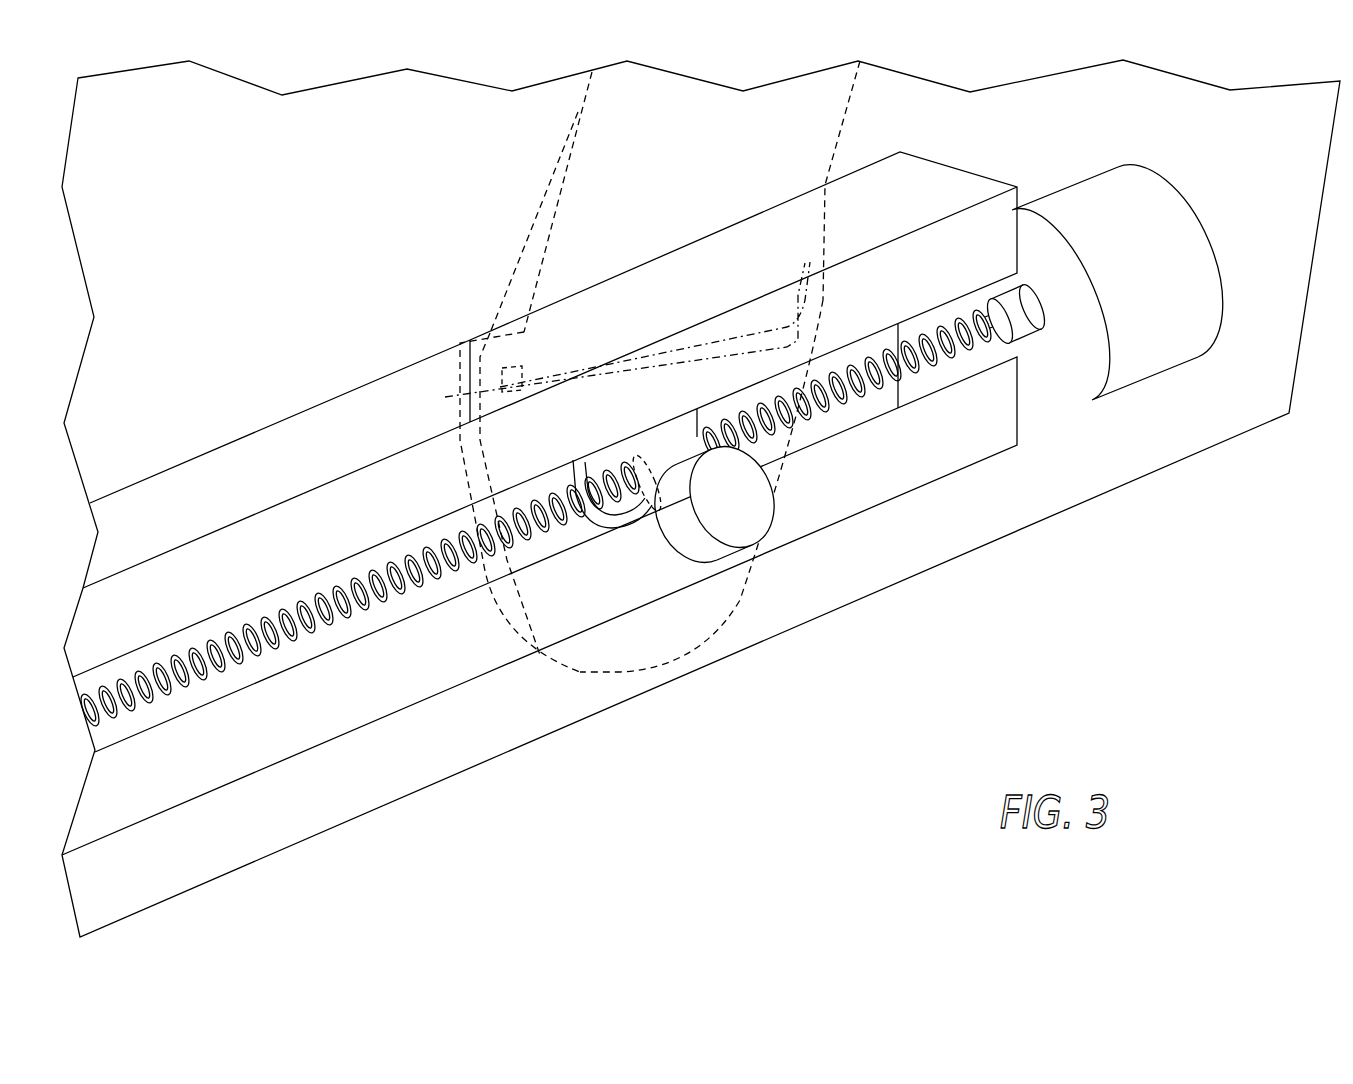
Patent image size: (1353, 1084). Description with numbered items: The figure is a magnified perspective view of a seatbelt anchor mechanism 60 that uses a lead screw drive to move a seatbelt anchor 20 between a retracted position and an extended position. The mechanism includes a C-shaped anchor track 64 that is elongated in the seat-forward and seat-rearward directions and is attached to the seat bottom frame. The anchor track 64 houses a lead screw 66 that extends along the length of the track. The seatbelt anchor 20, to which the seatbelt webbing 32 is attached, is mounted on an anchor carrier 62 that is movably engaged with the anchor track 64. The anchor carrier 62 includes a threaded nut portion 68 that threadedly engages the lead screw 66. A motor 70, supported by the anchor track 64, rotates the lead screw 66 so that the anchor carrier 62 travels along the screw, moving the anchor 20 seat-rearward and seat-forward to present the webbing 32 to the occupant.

The anchor 20 is at (490, 352).
The seatbelt webbing 32 is at (597, 196).
The seatbelt anchor mechanism 60 is at (967, 482).
The anchor carrier 62 is at (728, 498).
The anchor track 64 is at (977, 177).
The lead screw 66 is at (953, 300).
The threaded nut portion 68 is at (605, 460).
The motor 70 is at (1168, 188).